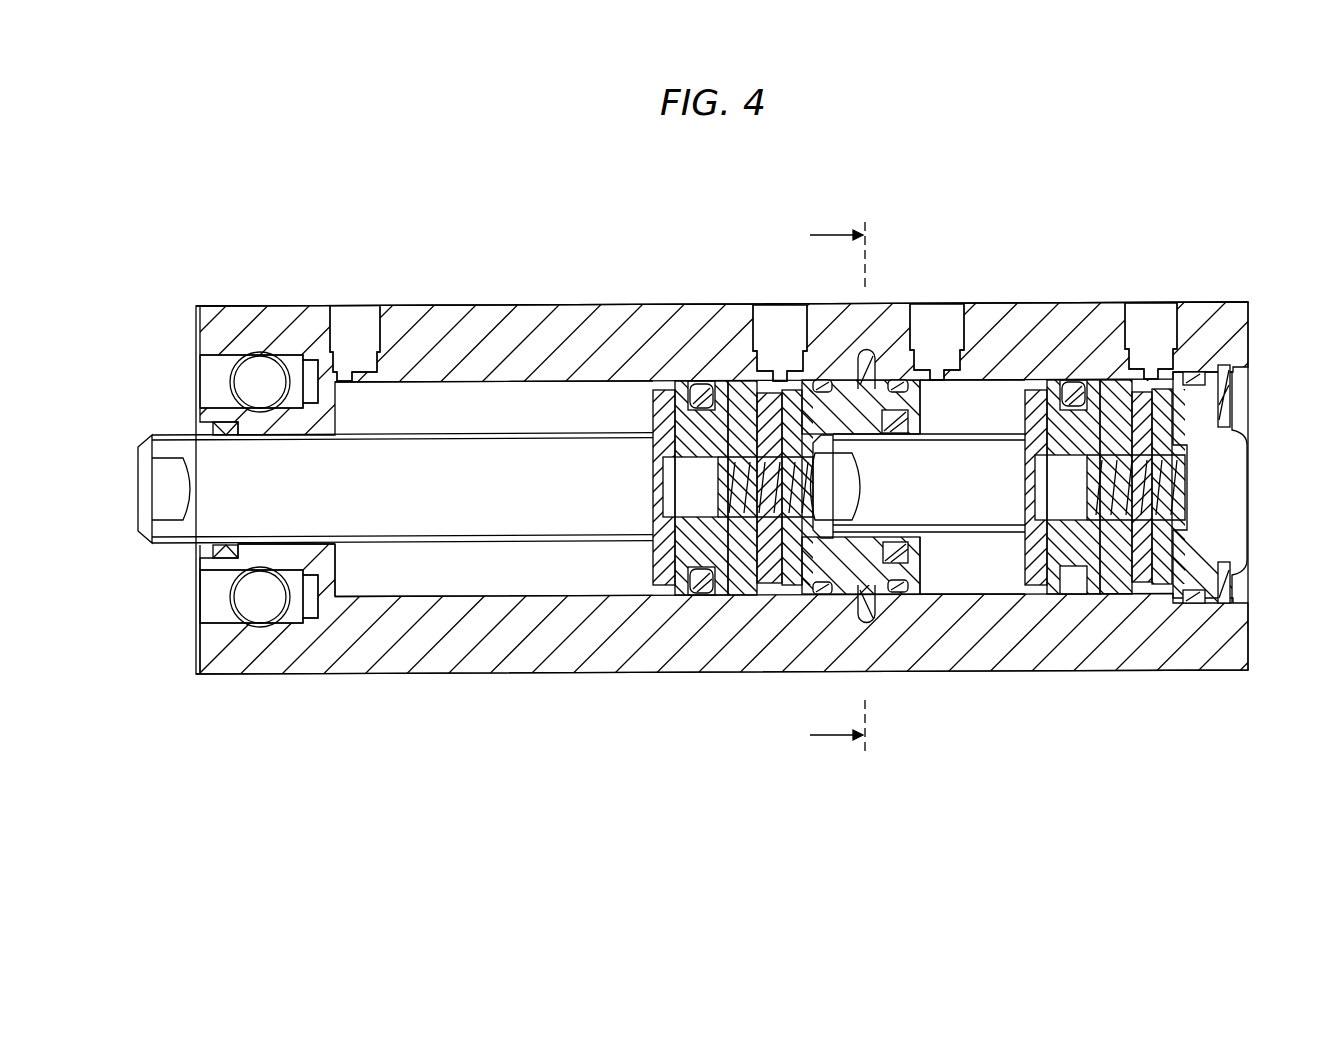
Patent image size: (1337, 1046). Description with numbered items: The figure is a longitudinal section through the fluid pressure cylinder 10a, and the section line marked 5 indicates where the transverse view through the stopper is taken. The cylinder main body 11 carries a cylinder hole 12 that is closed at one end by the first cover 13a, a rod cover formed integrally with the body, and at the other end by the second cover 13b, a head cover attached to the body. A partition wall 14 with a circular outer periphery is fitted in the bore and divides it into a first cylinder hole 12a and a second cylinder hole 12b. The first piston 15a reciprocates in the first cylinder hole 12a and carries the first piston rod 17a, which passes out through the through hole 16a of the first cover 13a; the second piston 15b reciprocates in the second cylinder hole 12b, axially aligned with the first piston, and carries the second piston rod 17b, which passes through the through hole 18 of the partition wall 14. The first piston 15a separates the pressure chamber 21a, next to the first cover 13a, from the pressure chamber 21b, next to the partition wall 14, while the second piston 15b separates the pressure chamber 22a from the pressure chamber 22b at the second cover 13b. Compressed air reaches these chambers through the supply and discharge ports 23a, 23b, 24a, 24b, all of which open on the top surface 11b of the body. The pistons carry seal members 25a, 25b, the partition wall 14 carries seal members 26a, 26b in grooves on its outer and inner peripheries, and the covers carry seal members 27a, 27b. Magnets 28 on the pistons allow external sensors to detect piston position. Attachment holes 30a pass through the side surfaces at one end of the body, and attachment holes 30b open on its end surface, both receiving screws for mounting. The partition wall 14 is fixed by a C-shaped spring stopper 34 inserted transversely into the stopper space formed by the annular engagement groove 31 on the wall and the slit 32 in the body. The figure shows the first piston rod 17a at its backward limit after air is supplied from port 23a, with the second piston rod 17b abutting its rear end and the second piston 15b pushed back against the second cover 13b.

The fluid pressure cylinder 10a is at (1218, 293).
The cylinder main body 11 is at (1220, 337).
The top surface 11b is at (615, 306).
The cylinder hole 12 is at (520, 596).
The first cylinder hole 12a is at (512, 392).
The second cylinder hole 12b is at (998, 387).
The first cover 13a is at (322, 562).
The second cover 13b is at (1218, 508).
The partition wall 14 is at (868, 407).
The first piston 15a is at (682, 583).
The second piston 15b is at (1114, 578).
The through hole 16a is at (233, 510).
The first piston rod 17a is at (433, 482).
The second piston rod 17b is at (968, 535).
The through hole 18 is at (870, 532).
The pressure chamber 21a is at (455, 578).
The pressure chamber 21b is at (772, 588).
The pressure chamber 22a is at (1008, 578).
The pressure chamber 22b is at (1151, 587).
The supply and discharge port 23a is at (355, 318).
The supply and discharge port 23b is at (778, 330).
The supply and discharge port 24a is at (940, 330).
The supply and discharge port 24b is at (1152, 330).
The seal member 25a is at (700, 386).
The seal member 25b is at (1072, 392).
The seal member 26a is at (912, 422).
The seal member 26b is at (822, 594).
The seal member 27a is at (212, 428).
The seal member 27b is at (1197, 603).
The magnet 28 is at (710, 594).
The attachment hole 30a is at (260, 376).
The attachment hole 30b is at (218, 380).
The engagement groove 31 is at (872, 587).
The slit 32 is at (868, 623).
The stopper 34 is at (864, 372).
The section line V-V 5 is at (837, 486).